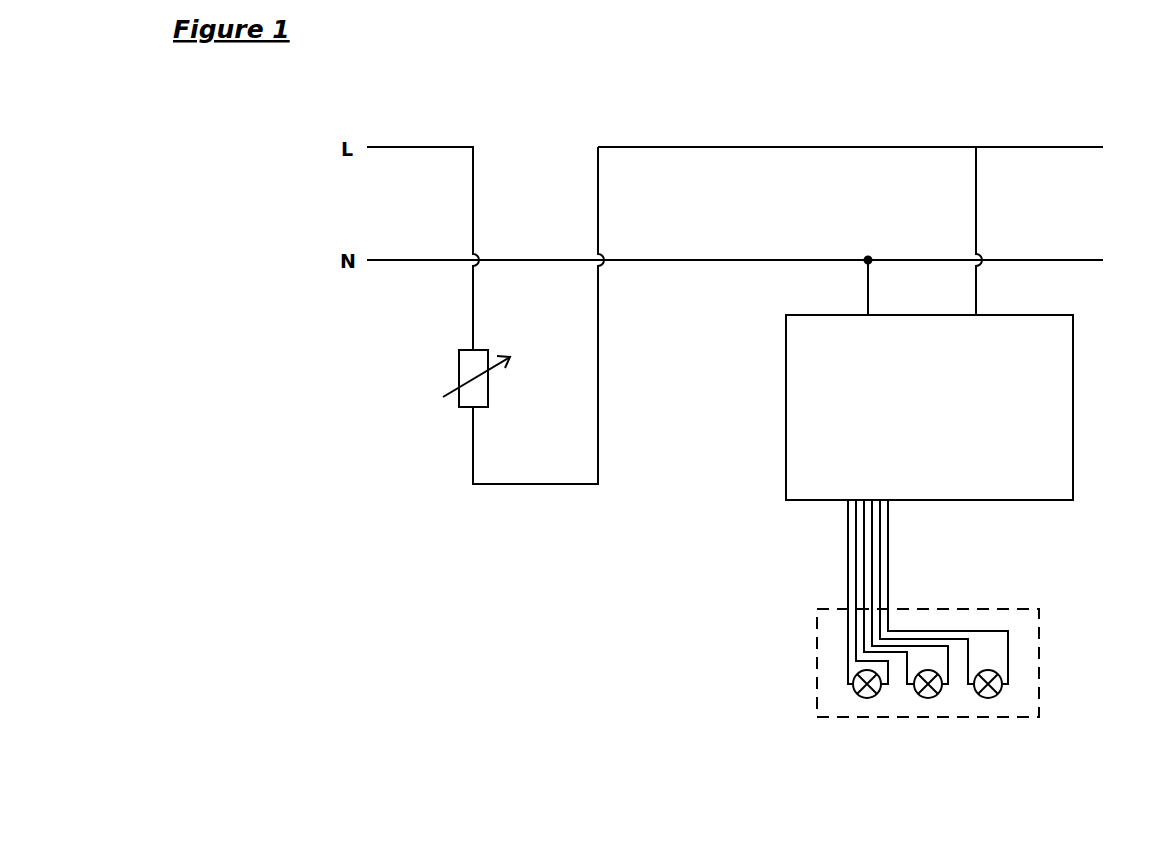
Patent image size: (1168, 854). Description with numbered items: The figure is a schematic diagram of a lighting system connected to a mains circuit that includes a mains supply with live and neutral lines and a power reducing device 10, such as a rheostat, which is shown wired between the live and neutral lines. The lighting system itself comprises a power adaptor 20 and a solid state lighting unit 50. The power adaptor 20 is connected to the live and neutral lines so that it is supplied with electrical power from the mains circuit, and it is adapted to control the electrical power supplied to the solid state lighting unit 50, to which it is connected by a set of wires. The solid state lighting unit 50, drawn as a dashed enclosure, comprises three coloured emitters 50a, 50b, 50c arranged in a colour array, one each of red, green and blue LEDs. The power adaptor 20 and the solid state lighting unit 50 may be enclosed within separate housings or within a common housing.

The power reducing device 10 is at (467, 398).
The power adaptor 20 is at (929, 407).
The solid state lighting unit 50 is at (1032, 635).
The coloured emitter 50a is at (867, 698).
The coloured emitter 50b is at (928, 698).
The coloured emitter 50c is at (988, 698).